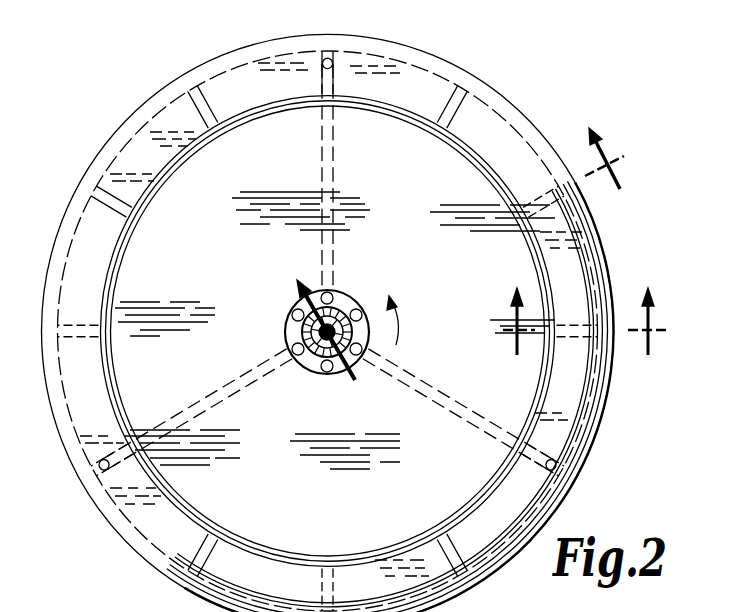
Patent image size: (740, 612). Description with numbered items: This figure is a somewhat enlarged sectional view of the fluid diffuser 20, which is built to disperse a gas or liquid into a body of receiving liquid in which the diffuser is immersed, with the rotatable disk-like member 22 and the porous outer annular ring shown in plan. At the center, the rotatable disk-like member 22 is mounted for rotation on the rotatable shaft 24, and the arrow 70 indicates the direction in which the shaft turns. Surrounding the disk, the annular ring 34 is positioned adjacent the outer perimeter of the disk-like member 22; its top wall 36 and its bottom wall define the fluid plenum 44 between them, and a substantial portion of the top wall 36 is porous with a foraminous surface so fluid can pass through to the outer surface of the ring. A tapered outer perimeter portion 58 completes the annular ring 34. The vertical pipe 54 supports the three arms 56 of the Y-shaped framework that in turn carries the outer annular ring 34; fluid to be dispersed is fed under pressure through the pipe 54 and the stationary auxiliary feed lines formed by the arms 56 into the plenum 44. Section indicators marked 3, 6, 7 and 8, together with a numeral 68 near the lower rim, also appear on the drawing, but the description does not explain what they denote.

The fluid diffuser 20 is at (527, 81).
The rotatable disk-like member 22 is at (263, 280).
The rotatable shaft 24 is at (292, 326).
The annular ring 34 is at (155, 90).
The top wall 36 is at (216, 88).
The fluid plenum 44 is at (80, 250).
The vertical pipe 54 is at (312, 373).
The arms 56 is at (338, 225).
The tapered outer perimeter portion 58 is at (90, 173).
The bottom rib 68 is at (435, 590).
The arrow 70 is at (398, 334).
The section line 3- 3 is at (585, 345).
The section line 6- 6 is at (488, 283).
The section line 7- 7 is at (488, 283).
The section line 8- 8 is at (488, 283).